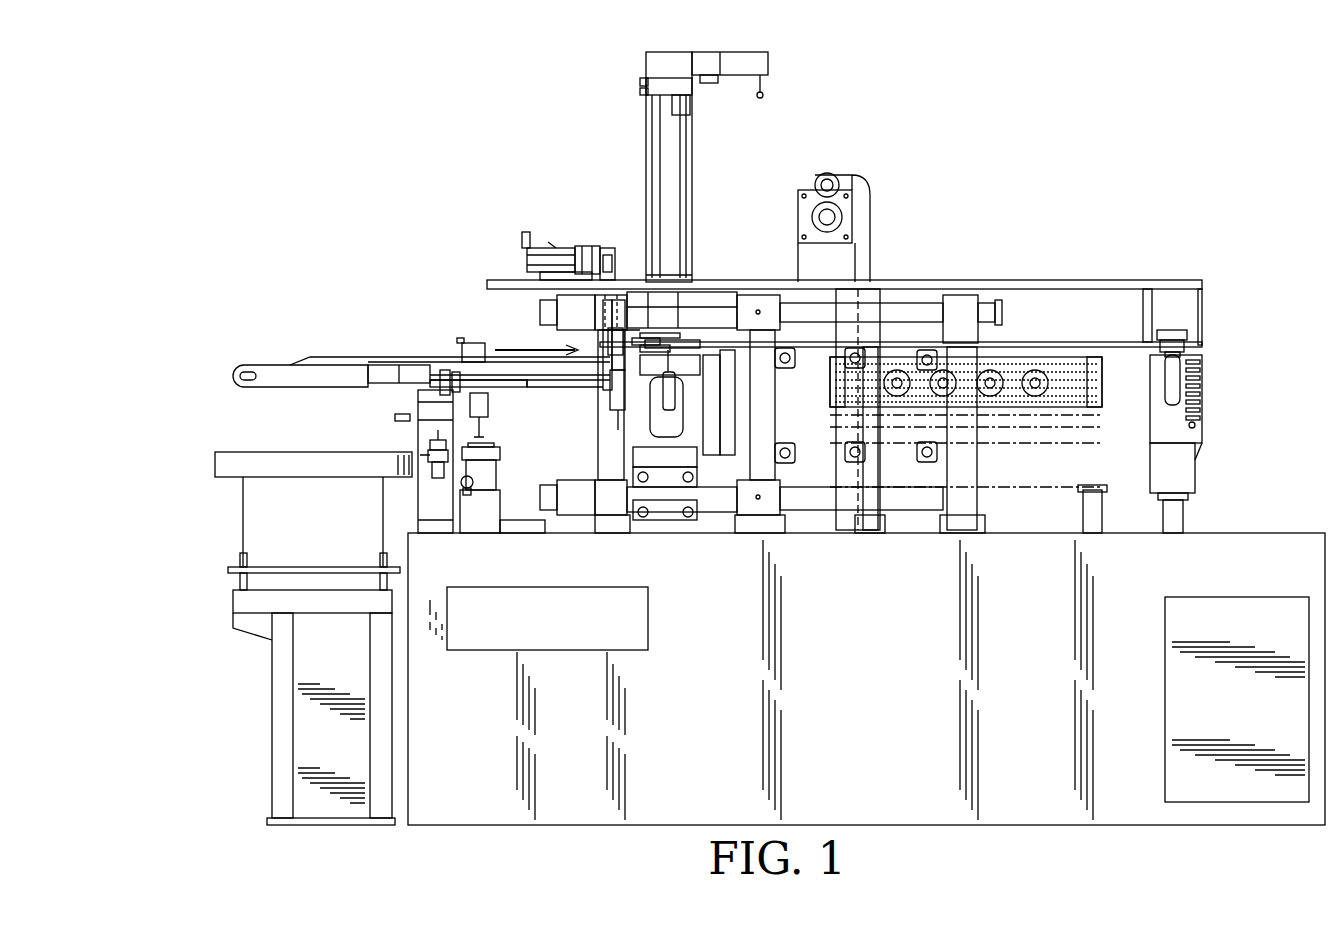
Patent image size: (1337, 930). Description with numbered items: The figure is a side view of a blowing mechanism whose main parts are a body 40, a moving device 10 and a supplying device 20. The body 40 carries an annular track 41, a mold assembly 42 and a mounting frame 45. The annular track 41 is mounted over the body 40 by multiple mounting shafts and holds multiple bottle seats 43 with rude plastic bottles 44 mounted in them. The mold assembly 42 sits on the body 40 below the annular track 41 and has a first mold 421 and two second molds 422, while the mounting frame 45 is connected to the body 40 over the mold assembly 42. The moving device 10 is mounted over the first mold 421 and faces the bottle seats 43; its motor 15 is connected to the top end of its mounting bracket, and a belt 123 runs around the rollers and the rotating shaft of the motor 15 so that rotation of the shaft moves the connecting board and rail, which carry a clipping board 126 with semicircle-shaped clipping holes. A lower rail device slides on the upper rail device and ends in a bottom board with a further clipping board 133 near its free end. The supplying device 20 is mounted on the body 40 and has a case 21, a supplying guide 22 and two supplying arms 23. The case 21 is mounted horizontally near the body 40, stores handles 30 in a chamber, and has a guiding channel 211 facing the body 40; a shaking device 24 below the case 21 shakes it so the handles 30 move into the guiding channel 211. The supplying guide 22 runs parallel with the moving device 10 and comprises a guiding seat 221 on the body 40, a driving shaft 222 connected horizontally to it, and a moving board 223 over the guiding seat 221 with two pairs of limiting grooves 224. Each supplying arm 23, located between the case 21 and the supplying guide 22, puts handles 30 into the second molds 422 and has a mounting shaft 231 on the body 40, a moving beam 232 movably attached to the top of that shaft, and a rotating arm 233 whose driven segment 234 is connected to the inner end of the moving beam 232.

The moving device 10 is at (576, 219).
The motor 15 is at (525, 260).
The supplying device 20 is at (326, 322).
The case 21 is at (235, 468).
The supplying guide 22 is at (484, 548).
The supplying arm 23 is at (378, 417).
The shaking device 24 is at (255, 510).
The handle 30 is at (499, 435).
The body 40 is at (966, 246).
The annular track 41 is at (1068, 344).
The mold assembly 42 is at (772, 270).
The bottle seat 43 is at (1178, 333).
The rude plastic bottle 44 is at (1172, 380).
The mounting frame 45 is at (1020, 286).
The belt 123 is at (606, 275).
The clipping board 126 is at (666, 334).
The clipping board 133 is at (652, 350).
The guiding channel 211 is at (405, 455).
The guiding seat 221 is at (472, 522).
The driving shaft 222 is at (461, 488).
The moving board 223 is at (500, 464).
The limiting groove 224 is at (493, 448).
The mounting shaft 231 is at (432, 535).
The moving beam 232 is at (348, 372).
The rotating arm 233 is at (499, 396).
The driven segment 234 is at (477, 350).
The first mold 421 is at (646, 452).
The second mold 422 is at (690, 437).